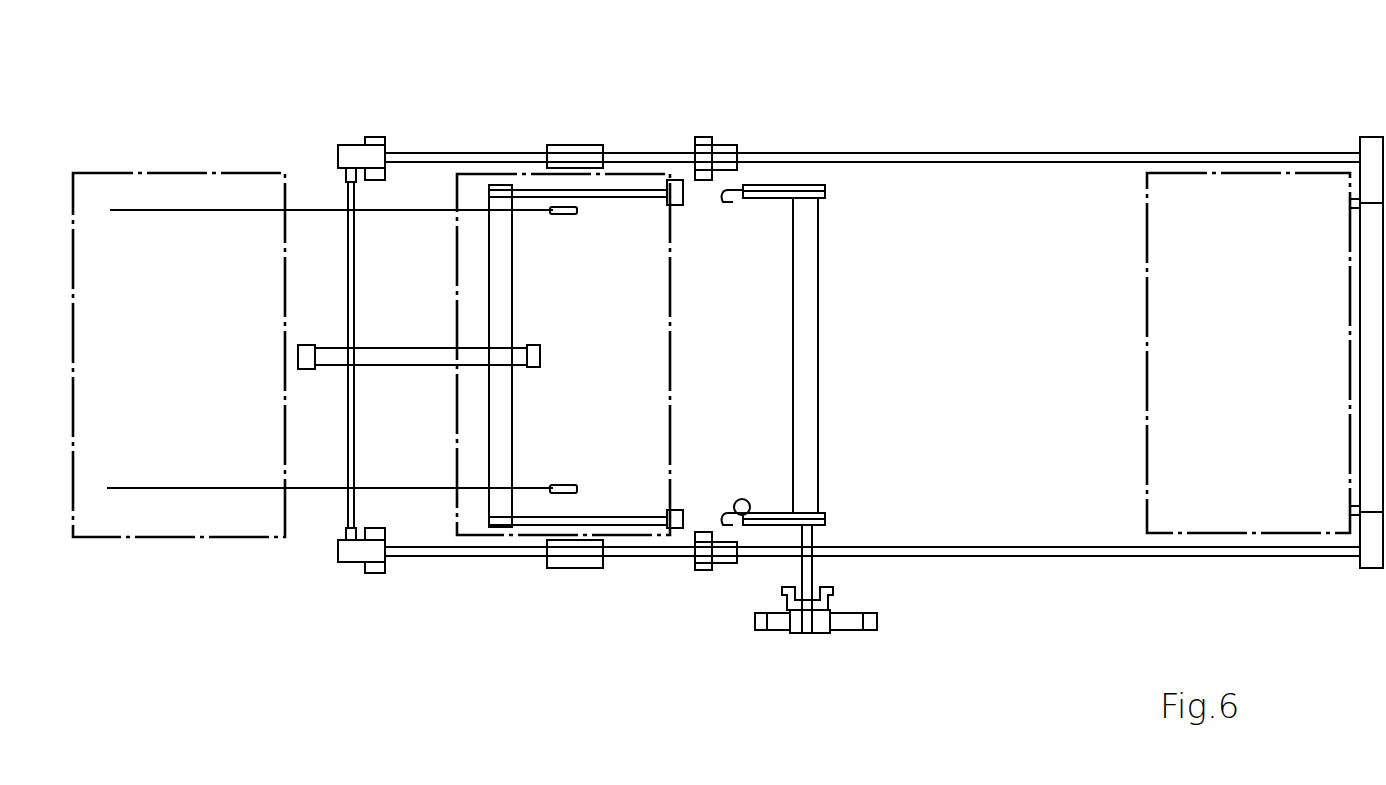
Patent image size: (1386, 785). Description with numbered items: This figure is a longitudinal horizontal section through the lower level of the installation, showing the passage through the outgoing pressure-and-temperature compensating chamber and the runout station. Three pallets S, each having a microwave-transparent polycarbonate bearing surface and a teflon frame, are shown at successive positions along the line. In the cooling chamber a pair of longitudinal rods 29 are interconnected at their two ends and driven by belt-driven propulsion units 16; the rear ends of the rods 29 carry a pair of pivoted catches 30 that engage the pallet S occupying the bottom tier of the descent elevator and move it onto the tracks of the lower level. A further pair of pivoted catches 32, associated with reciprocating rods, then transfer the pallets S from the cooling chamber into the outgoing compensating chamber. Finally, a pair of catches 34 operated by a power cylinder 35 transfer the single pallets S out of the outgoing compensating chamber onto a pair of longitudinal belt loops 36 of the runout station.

The belt-driven propulsion units 16 is at (568, 148).
The pair of longitudinal rods 29 is at (912, 157).
The pivoted catches 30 is at (1348, 218).
The pivoted catches 32 is at (737, 198).
The pair of catches 34 is at (680, 205).
The power cylinder 35 is at (390, 360).
The longitudinal belt loops 36 is at (303, 210).
The pallet S is at (77, 350).